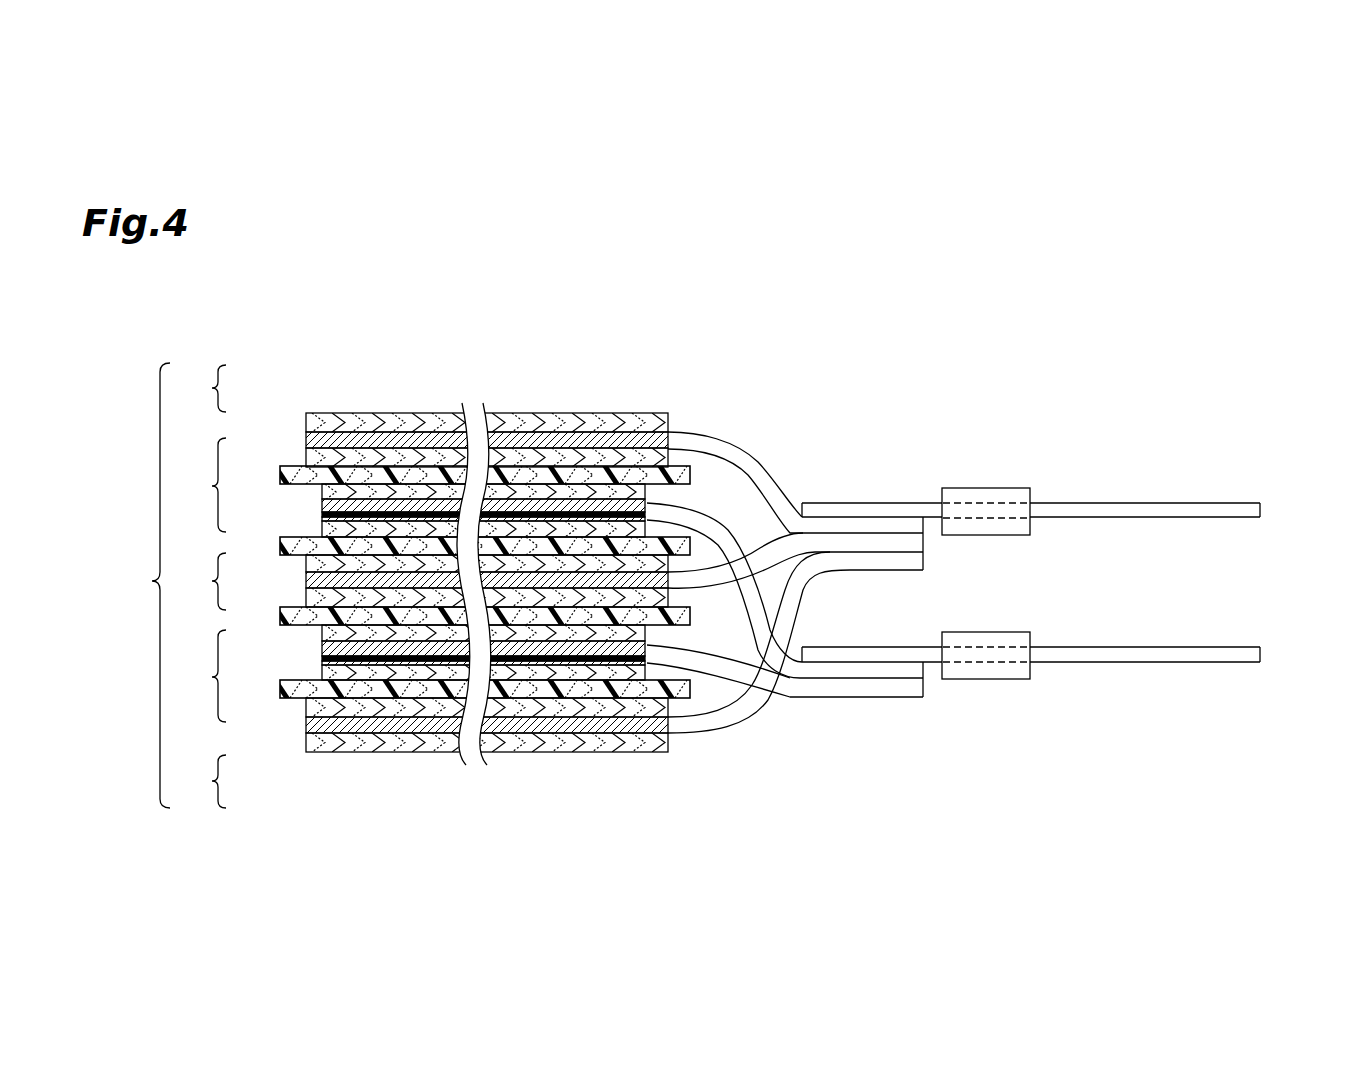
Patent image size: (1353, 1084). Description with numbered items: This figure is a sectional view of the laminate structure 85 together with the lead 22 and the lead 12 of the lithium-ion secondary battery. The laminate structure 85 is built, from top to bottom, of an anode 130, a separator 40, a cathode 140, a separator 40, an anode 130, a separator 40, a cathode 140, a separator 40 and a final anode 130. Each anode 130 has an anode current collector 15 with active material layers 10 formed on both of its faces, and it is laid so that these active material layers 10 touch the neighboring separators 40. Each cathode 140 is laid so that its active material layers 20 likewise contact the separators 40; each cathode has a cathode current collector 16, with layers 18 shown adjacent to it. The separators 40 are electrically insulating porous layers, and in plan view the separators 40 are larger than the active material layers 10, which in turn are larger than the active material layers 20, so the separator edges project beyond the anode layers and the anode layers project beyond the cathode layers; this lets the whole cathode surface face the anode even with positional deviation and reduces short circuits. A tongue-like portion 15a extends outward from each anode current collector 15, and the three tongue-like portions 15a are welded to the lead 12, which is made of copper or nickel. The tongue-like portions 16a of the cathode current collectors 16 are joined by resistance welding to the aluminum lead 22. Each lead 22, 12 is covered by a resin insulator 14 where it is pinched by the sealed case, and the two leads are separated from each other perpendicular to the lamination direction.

The laminate structure 85 is at (147, 585).
The anode 130 is at (198, 586).
The cathode 140 is at (197, 580).
The active material layer 10 is at (318, 428).
The anode current collector 15 is at (318, 442).
The tongue-like portion 15a is at (740, 440).
The separator 40 is at (292, 476).
The active material layer 20 is at (322, 493).
The negative electrode intermediate layer 18 is at (323, 504).
The cathode current collector 16 is at (323, 511).
The tongue-like portion 16a is at (737, 538).
The insulator 14 is at (985, 488).
The lead 12 is at (1262, 510).
The lead 22 is at (1262, 655).